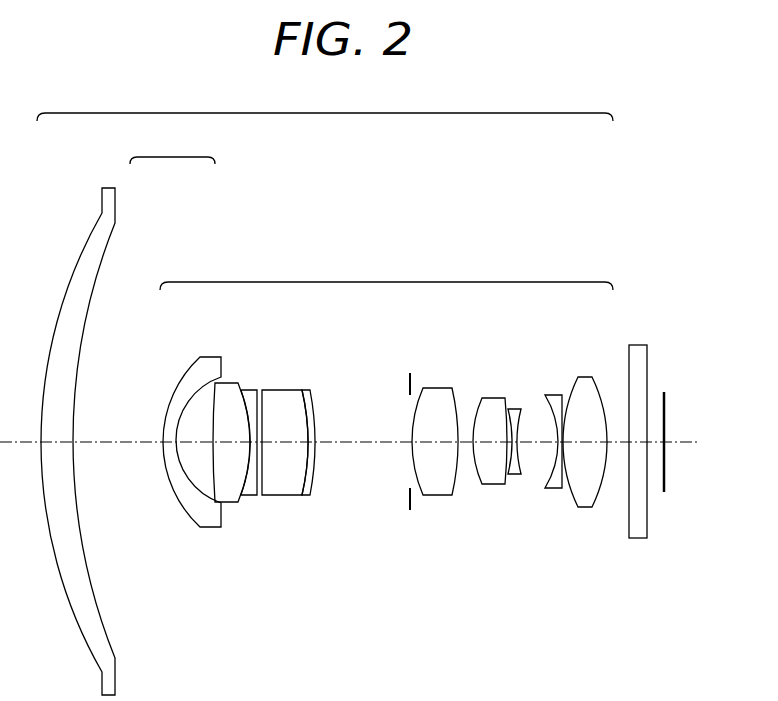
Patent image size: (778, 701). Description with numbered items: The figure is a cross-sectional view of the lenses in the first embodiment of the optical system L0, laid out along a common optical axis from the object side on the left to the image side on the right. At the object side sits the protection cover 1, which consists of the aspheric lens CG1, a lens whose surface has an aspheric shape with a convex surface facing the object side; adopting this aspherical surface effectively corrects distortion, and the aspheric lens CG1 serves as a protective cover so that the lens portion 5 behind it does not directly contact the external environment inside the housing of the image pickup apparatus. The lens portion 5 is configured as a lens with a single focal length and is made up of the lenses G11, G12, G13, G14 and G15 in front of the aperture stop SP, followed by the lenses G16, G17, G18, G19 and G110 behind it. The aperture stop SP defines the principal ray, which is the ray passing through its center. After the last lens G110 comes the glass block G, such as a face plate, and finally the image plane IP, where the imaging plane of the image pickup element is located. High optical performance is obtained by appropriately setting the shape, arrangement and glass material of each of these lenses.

The optical system L0 is at (325, 101).
The protection cover 1 is at (172, 145).
The aspheric lens CG1 is at (100, 245).
The lens portion 5 is at (386, 270).
The lens G11 is at (212, 362).
The lens G12 is at (232, 393).
The lens G13 is at (251, 394).
The lens G14 is at (290, 397).
The lens G15 is at (313, 398).
The aperture stop SP is at (410, 373).
The lens G16 is at (435, 397).
The lens G17 is at (495, 402).
The lens G18 is at (513, 414).
The lens G19 is at (555, 398).
The lens G110 is at (583, 386).
The glass block G is at (640, 345).
The image plane IP is at (664, 392).